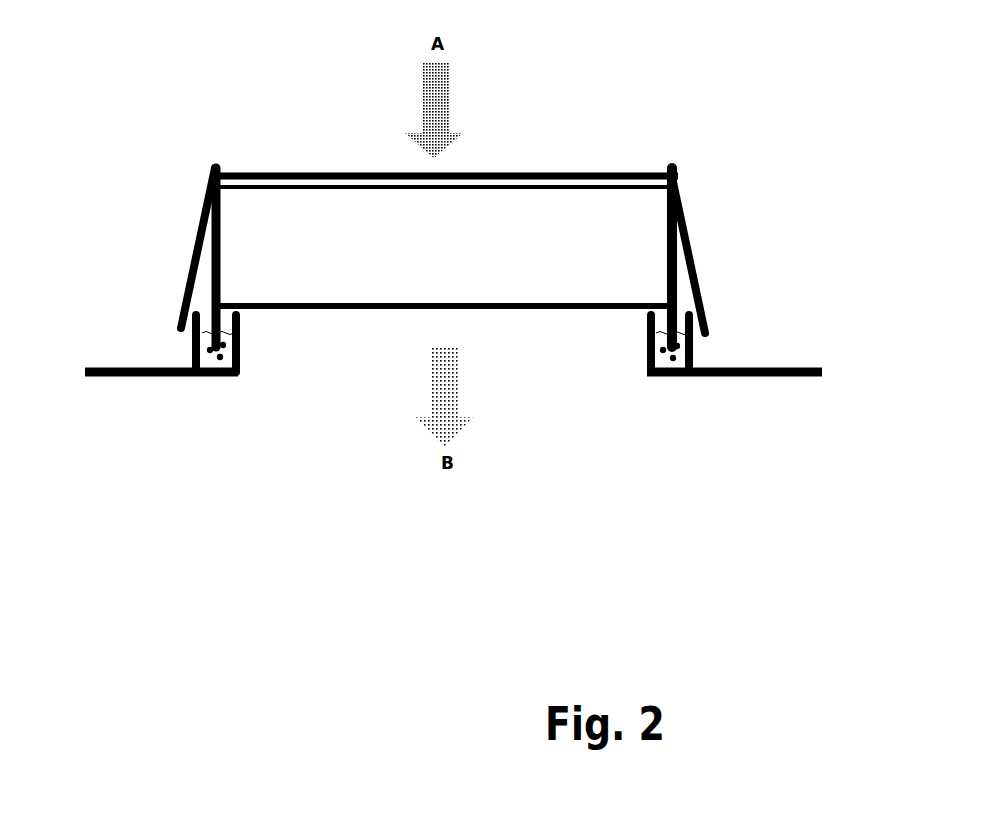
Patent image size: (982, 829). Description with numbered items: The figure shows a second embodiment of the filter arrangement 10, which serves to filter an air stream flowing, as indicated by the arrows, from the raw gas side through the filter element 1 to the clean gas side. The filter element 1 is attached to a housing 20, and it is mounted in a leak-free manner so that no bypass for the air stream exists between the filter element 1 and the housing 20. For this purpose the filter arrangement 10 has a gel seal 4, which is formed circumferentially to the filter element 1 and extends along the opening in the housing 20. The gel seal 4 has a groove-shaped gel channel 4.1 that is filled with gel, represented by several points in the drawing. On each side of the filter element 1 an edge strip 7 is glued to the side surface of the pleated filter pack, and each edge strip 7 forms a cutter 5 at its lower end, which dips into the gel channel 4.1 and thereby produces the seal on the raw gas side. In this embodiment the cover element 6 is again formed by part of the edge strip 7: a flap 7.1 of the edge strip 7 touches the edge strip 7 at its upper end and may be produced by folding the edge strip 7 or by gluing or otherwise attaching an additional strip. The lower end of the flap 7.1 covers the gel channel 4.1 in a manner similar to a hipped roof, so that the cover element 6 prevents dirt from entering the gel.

The filter element 1 is at (557, 170).
The gel seal 4 is at (194, 349).
The gel channel 4.1 is at (687, 358).
The cutter 5 is at (556, 249).
The cover element 6 is at (554, 250).
The edge strip 7 is at (653, 267).
The flap 7.1 is at (717, 298).
The filter arrangement 10 is at (827, 101).
The housing 20 is at (793, 378).